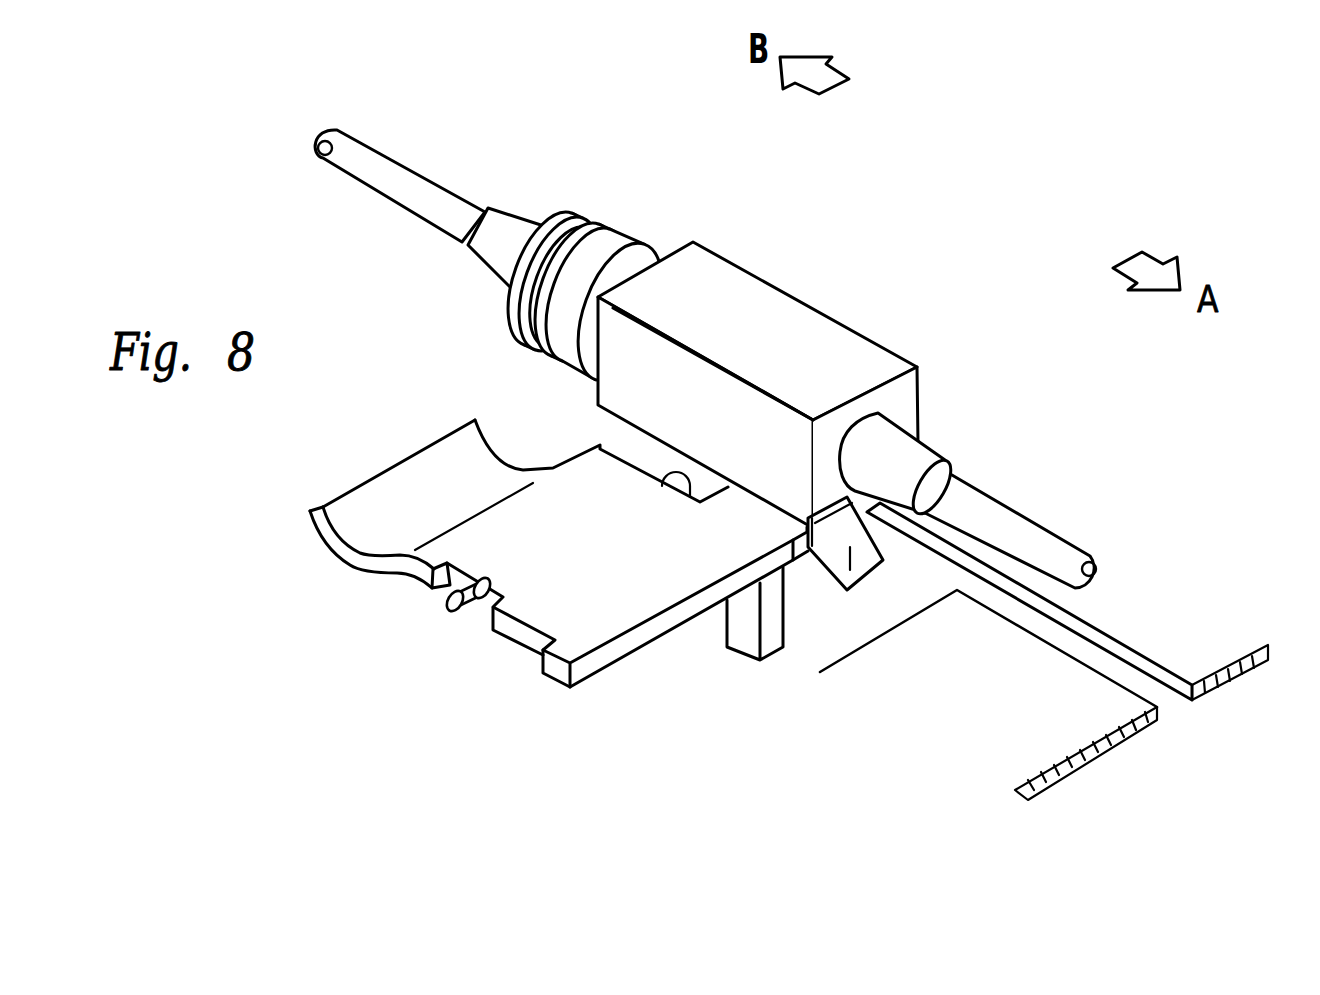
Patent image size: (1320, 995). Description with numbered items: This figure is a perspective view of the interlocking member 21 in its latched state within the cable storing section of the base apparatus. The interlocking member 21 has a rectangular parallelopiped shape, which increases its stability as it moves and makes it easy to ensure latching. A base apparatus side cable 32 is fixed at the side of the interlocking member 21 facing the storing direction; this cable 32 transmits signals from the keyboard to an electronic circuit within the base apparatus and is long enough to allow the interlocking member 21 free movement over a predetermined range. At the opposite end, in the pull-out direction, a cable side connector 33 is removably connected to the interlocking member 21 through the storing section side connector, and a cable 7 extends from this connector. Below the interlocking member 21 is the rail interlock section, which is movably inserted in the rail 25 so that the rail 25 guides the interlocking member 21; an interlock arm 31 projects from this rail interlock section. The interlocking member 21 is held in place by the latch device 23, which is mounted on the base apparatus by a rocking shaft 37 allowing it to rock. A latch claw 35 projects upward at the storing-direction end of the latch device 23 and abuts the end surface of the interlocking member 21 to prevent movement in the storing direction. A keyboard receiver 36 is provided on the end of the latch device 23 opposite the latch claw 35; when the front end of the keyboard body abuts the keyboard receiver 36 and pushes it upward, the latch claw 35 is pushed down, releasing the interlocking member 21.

The optical fiber cable 7 is at (459, 129).
The interlocking member 21 is at (877, 257).
The latch device 23 is at (600, 590).
The rail 25 is at (1143, 600).
The interlock arm 31 is at (727, 708).
The base apparatus side cable 32 is at (1045, 470).
The cable side connector 33 is at (683, 191).
The latch claw 35 is at (855, 557).
The keyboard receiver 36 is at (312, 601).
The rocking shaft 37 is at (424, 648).